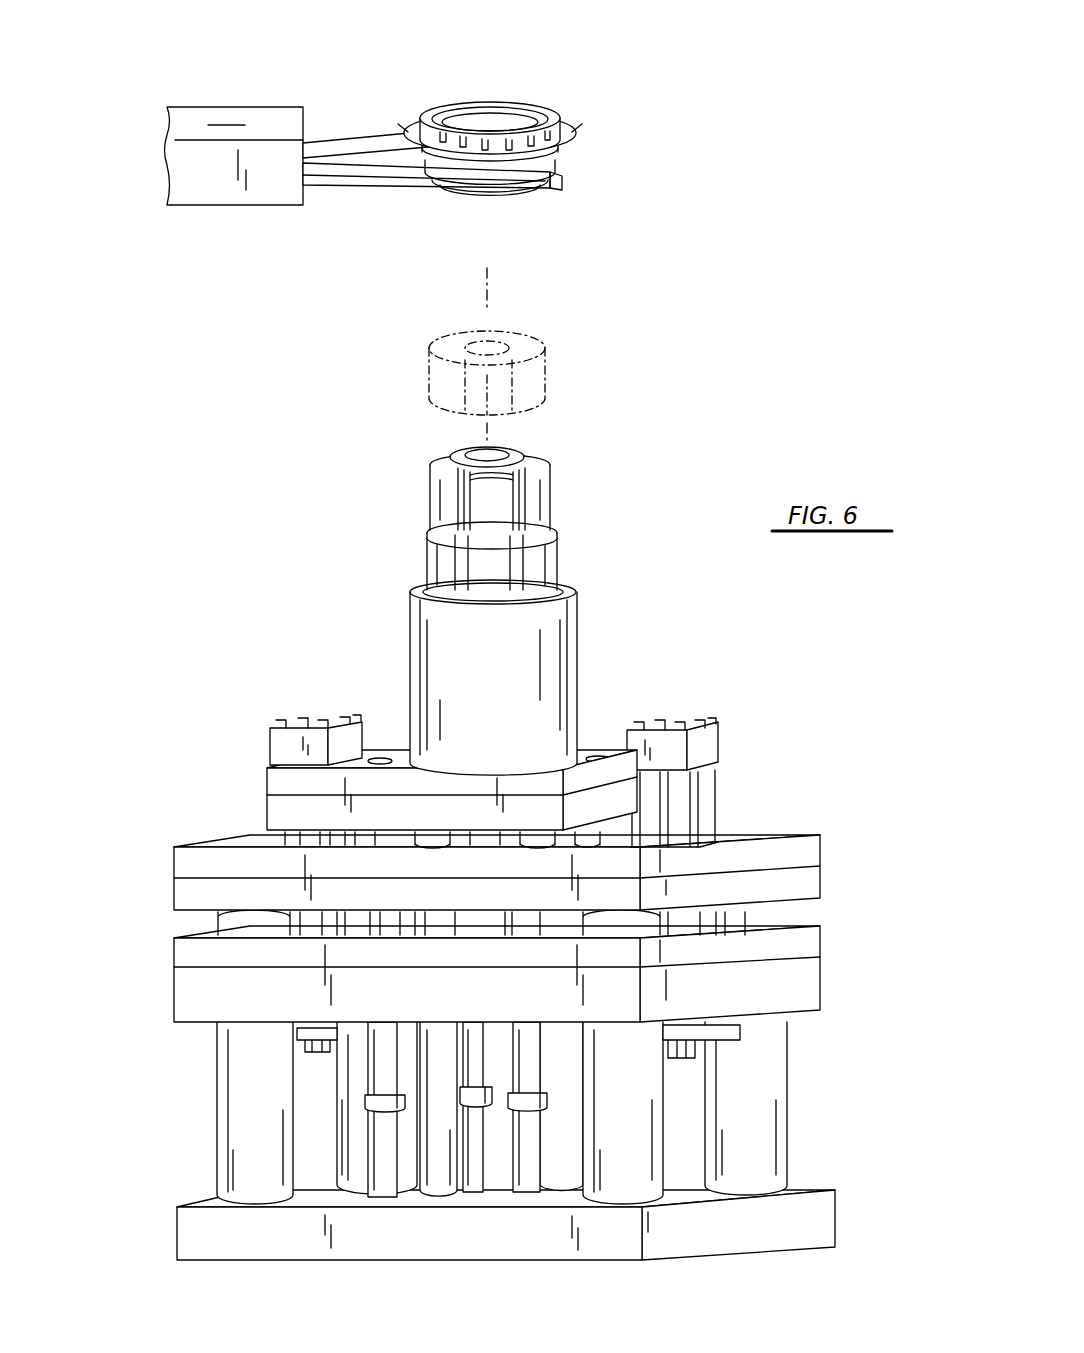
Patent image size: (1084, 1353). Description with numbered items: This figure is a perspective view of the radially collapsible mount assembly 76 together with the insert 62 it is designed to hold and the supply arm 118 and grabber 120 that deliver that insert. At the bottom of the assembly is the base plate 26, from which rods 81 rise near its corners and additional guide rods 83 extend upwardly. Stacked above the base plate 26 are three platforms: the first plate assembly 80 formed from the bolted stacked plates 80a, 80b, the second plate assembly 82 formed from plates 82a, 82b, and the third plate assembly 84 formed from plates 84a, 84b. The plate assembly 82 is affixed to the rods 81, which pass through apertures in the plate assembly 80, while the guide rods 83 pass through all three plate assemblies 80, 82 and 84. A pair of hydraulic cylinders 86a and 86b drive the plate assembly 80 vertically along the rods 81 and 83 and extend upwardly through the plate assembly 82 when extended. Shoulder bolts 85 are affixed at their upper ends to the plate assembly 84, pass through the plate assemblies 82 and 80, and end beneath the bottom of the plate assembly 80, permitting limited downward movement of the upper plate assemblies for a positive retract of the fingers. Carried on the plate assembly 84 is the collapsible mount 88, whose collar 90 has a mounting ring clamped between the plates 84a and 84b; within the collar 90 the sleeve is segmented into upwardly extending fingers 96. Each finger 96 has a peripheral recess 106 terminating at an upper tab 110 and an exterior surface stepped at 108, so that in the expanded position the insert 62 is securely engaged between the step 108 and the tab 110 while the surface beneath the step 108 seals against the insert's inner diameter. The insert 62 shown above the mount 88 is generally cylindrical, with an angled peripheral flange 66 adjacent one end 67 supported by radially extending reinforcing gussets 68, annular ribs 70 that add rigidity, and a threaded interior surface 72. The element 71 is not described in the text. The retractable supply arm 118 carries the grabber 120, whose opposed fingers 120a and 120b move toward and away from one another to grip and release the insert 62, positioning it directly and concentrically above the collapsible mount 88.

The base plate 26 is at (830, 1222).
The insert 62 is at (588, 129).
The angled peripheral flange 66 is at (565, 147).
The end 67 is at (540, 120).
The reinforcing gussets 68 is at (410, 126).
The annular ribs 70 is at (566, 172).
The retainer 71 is at (515, 202).
The interior surface 72 is at (453, 118).
The radially collapsible mount assembly 76 is at (162, 888).
The first plate assembly 80 is at (825, 965).
The plate 80a is at (822, 938).
The plate 80b is at (822, 1001).
The rods 81 is at (345, 1066).
The second plate assembly 82 is at (825, 858).
The plate 82a is at (822, 845).
The plate 82b is at (822, 881).
The guide rods 83 is at (545, 1162).
The third plate assembly 84 is at (262, 787).
The plate 84a is at (265, 770).
The plate 84b is at (265, 809).
The shoulder bolts 85 is at (365, 1100).
The hydraulic cylinder 86a is at (720, 746).
The hydraulic cylinder 86b is at (270, 730).
The collapsible mount 88 is at (398, 641).
The collar 90 is at (580, 637).
The fingers 96 is at (475, 561).
The peripheral recess 106 is at (483, 497).
The step 108 is at (550, 522).
The tab 110 is at (448, 458).
The retractable supply arm 118 is at (200, 200).
The grabber 120 is at (340, 202).
The finger 120a is at (375, 148).
The finger 120b is at (337, 170).